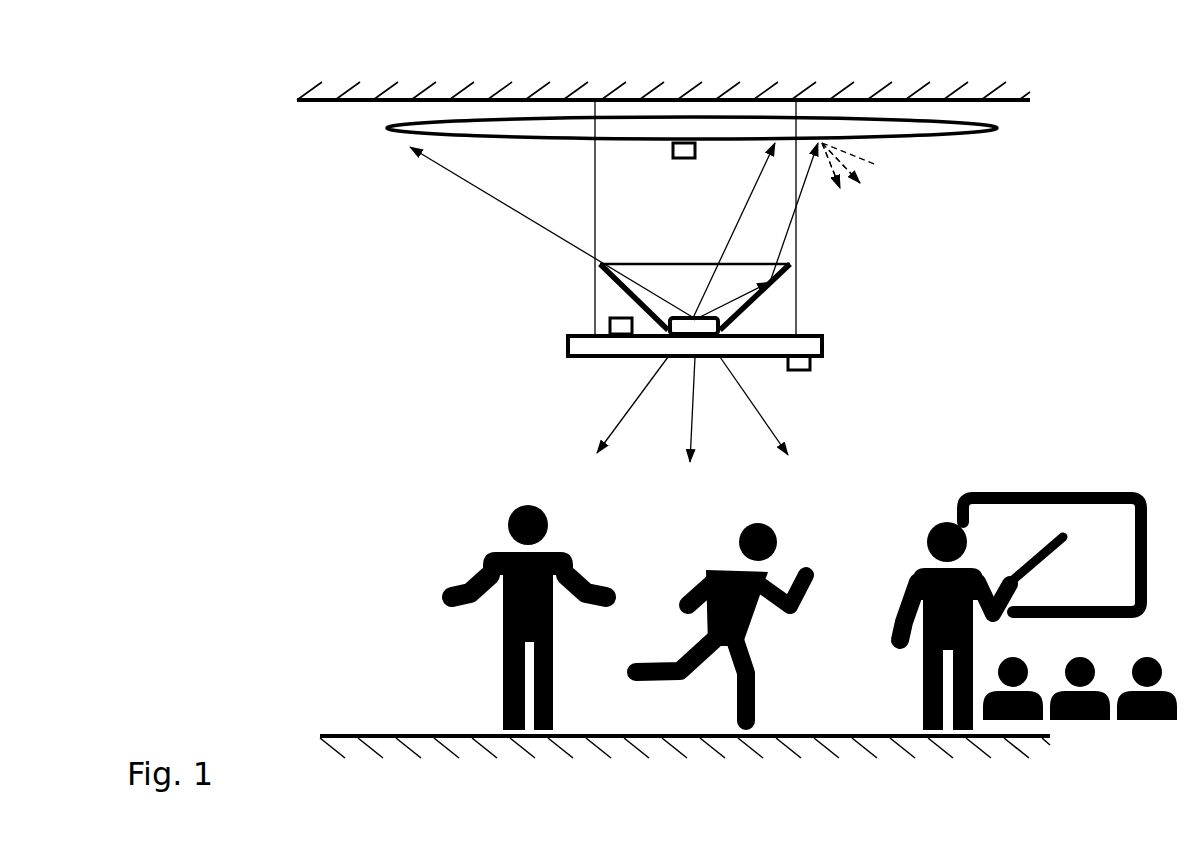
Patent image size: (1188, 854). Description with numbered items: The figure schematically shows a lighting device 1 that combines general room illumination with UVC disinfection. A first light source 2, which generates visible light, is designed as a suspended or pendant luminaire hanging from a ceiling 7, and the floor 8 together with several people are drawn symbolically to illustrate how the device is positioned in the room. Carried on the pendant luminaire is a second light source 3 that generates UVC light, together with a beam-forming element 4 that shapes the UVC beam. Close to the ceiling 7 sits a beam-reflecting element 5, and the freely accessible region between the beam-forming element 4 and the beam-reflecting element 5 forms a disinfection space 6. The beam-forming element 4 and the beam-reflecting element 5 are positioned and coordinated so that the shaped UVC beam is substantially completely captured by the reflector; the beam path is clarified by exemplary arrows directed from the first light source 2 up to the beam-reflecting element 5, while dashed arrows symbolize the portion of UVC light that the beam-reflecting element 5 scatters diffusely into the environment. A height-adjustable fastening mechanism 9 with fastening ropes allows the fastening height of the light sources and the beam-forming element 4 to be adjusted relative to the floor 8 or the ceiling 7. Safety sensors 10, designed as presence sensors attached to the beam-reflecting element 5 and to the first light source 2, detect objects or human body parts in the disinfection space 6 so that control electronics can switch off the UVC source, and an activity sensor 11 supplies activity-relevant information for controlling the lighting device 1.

The lighting device 1 is at (280, 247).
The first light source 2 is at (822, 337).
The second light source 3 is at (747, 307).
The beam-forming element 4 is at (787, 273).
The beam-reflecting element 5 is at (985, 138).
The disinfection space 6 is at (612, 235).
The ceiling 7 is at (1023, 100).
The floor 8 is at (340, 736).
The height-adjustable fastening mechanism 9 is at (798, 228).
The safety sensors 10 is at (673, 153).
The activity sensor 11 is at (812, 368).